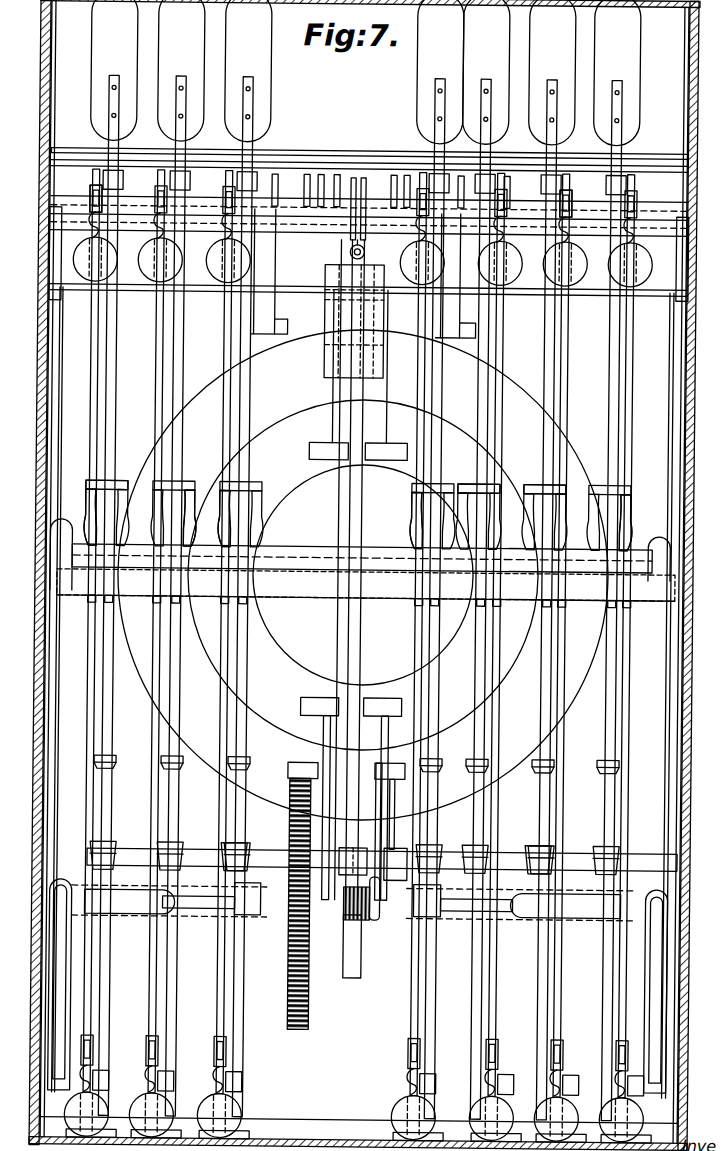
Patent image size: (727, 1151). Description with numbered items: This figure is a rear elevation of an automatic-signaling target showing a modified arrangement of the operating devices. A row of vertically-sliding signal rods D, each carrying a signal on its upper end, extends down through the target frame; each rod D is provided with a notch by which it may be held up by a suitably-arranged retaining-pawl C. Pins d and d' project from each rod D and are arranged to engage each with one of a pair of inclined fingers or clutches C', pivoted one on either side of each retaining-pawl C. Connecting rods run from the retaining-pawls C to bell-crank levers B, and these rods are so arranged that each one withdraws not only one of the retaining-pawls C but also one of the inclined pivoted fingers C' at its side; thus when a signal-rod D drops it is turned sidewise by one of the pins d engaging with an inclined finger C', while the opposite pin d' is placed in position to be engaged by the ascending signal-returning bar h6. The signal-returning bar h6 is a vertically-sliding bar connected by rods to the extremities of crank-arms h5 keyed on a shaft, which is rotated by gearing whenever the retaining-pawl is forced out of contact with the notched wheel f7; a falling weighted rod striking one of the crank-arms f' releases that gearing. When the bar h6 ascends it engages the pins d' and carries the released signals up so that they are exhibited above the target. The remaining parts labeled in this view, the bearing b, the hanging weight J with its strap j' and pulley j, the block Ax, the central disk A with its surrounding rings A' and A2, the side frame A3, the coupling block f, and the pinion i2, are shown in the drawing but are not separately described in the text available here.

The signal rod D is at (250, 156).
The guide bearing b is at (100, 205).
The bell-crank lever B is at (570, 205).
The suspension strap j' is at (368, 209).
The pulley and rod j is at (366, 568).
The weight cylinder J is at (354, 322).
The arm block Ax is at (405, 404).
The central disk A is at (363, 575).
The ring A' is at (363, 575).
The outer ring A2 is at (210, 697).
The frame A3 is at (596, 402).
The pin d is at (299, 485).
The pin d' is at (358, 501).
The retaining-pawl C is at (534, 513).
The inclined finger or clutch C' is at (236, 503).
The signal-returning bar h6 is at (366, 585).
The crank-arm h5 is at (672, 975).
The coupling block f is at (360, 881).
The crank-arm f' is at (394, 849).
The pinion i2 is at (348, 922).
The notched wheel f7 is at (358, 965).